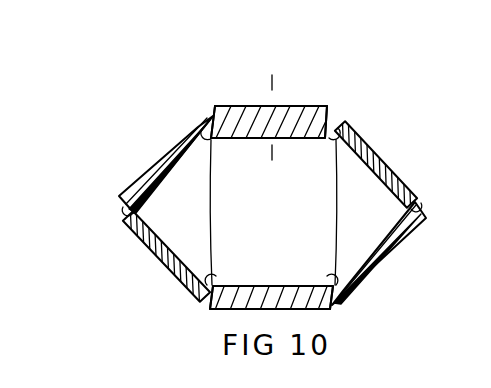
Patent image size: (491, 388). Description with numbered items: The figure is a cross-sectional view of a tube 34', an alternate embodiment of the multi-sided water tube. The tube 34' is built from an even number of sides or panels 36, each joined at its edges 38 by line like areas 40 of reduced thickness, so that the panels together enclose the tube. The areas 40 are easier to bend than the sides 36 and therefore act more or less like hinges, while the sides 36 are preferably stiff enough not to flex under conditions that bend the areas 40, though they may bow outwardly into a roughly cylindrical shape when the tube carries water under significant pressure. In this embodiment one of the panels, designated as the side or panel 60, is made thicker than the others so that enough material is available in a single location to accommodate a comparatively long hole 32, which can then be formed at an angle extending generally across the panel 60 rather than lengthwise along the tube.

The hole 32 is at (265, 105).
The side or panel 60 is at (283, 105).
The tube 34' is at (336, 192).
The sides or panels 36 is at (165, 153).
The edges 38 is at (135, 212).
The line like areas of reduced thickness 40 is at (212, 112).